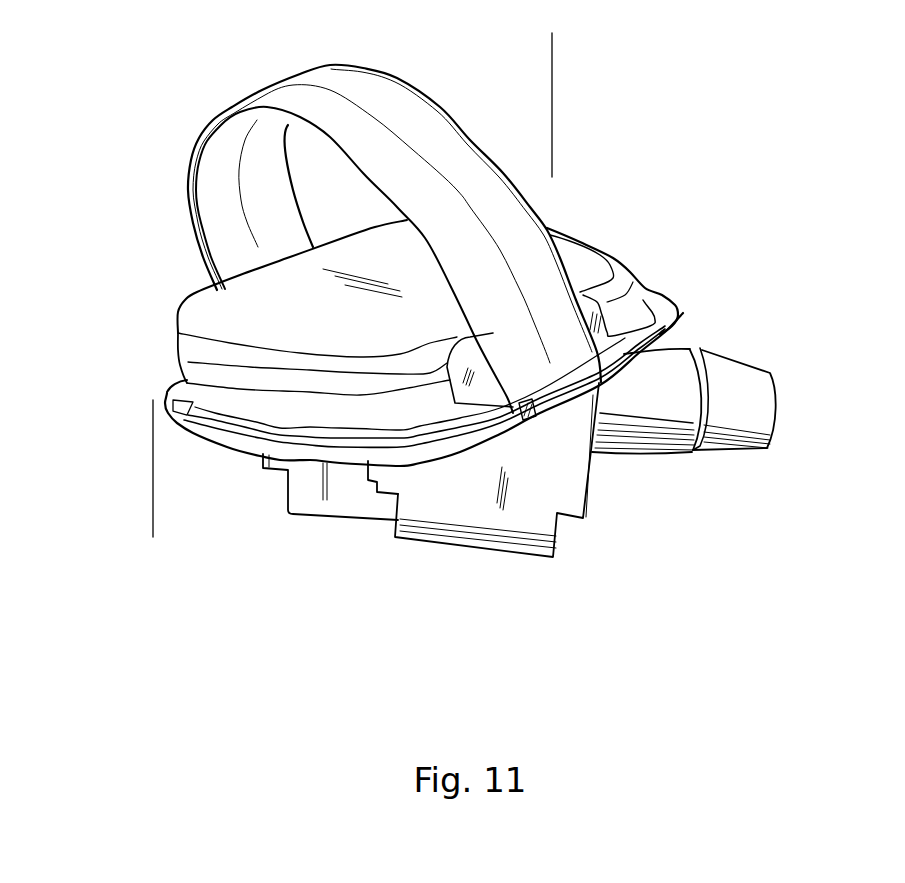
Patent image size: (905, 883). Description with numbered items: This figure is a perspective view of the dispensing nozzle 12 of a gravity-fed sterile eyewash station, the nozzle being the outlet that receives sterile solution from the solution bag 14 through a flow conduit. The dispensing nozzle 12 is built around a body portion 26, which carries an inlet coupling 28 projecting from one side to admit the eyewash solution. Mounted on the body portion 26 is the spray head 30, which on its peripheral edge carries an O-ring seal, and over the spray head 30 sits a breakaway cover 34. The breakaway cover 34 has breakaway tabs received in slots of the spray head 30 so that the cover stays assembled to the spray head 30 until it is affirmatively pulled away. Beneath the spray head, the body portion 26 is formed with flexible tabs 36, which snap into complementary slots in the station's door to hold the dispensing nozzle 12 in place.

The dispensing nozzle 12 is at (468, 578).
The solution bag 14 is at (552, 108).
The body portion 26 is at (488, 433).
The inlet coupling 28 is at (740, 387).
The spray head 30 is at (680, 318).
The breakaway cover 34 is at (220, 313).
The flexible tabs 36 is at (570, 493).